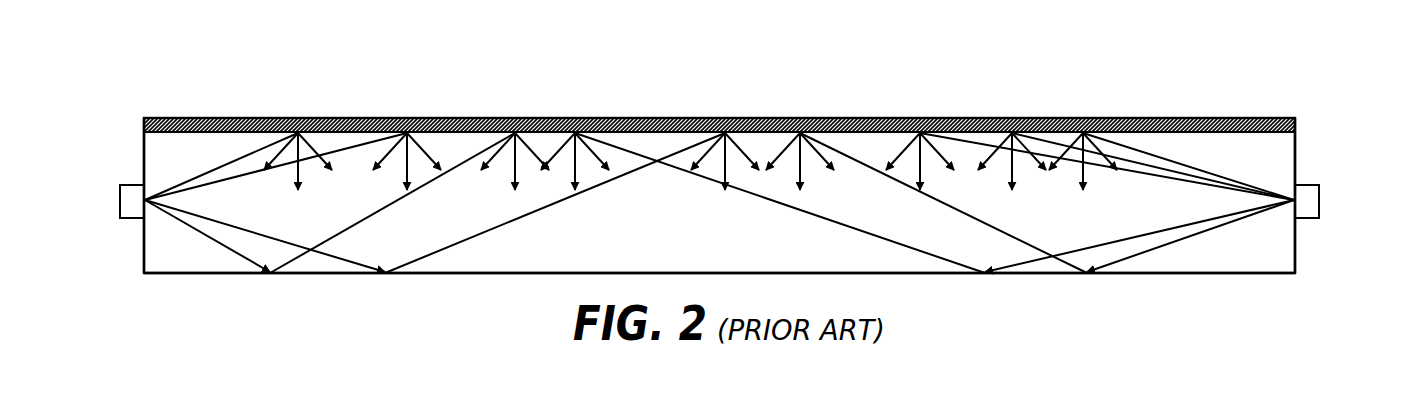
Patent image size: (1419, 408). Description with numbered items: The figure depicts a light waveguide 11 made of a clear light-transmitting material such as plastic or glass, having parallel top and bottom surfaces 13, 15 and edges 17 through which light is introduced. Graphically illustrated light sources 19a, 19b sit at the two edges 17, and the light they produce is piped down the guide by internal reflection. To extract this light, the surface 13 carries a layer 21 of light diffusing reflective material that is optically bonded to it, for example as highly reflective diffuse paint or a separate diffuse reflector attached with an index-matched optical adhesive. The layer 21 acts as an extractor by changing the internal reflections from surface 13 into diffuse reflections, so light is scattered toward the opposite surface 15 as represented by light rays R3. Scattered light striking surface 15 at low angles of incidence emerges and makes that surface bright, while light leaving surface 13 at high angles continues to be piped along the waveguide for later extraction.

The light waveguide 11 is at (190, 276).
The top surface 13 is at (222, 125).
The bottom surface 15 is at (442, 278).
The edges 17 is at (142, 147).
The light source 19a is at (128, 200).
The light source 19b is at (1312, 203).
The layer of light diffusing reflective material 21 is at (367, 125).
The light rays R3 is at (430, 146).